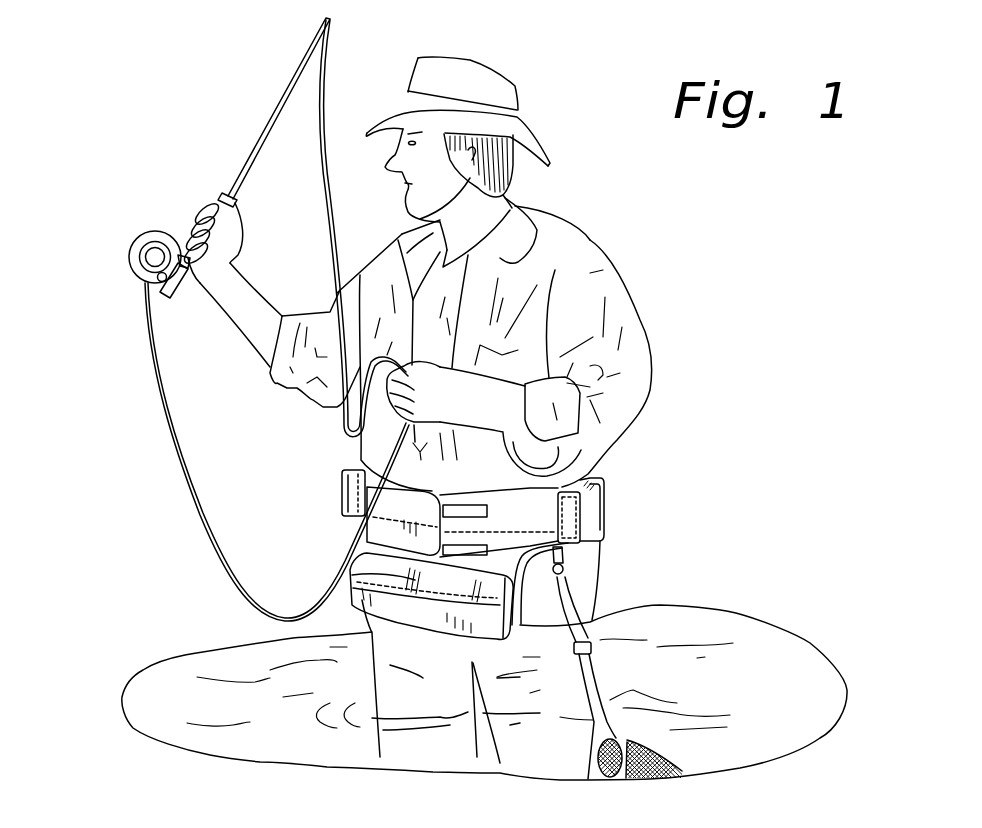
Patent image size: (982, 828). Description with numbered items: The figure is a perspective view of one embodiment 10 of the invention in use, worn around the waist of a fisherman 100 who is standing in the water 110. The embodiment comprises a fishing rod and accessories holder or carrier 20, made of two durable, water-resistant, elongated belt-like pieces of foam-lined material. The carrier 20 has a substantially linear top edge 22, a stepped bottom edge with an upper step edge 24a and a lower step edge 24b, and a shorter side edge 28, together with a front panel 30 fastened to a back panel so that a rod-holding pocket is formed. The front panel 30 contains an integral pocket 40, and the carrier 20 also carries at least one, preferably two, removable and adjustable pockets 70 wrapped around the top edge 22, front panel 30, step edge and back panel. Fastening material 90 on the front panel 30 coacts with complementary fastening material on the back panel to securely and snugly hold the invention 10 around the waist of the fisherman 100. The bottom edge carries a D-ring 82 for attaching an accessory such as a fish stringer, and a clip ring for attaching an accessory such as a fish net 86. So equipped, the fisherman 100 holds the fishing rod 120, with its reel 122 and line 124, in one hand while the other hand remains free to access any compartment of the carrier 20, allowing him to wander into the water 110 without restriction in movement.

The fisherman 100 is at (573, 255).
The fishing rod 120 is at (278, 105).
The reel 122 is at (148, 242).
The line 124 is at (320, 117).
The water 110 is at (753, 617).
The embodiment of the invention 10 is at (496, 508).
The fishing rod and accessories holder or carrier 20 is at (648, 533).
The front panel 30 is at (512, 525).
The fastening material 90 is at (450, 510).
The removable and adjustable pocket 70 is at (350, 493).
The shorter side edge 28 is at (443, 527).
The top edge 22 is at (365, 475).
The integral pocket 40 is at (350, 558).
The upper step edge 24a is at (360, 548).
The lower step edge 24b is at (610, 630).
The D-ring 82 is at (565, 568).
The fish net 86 is at (590, 762).